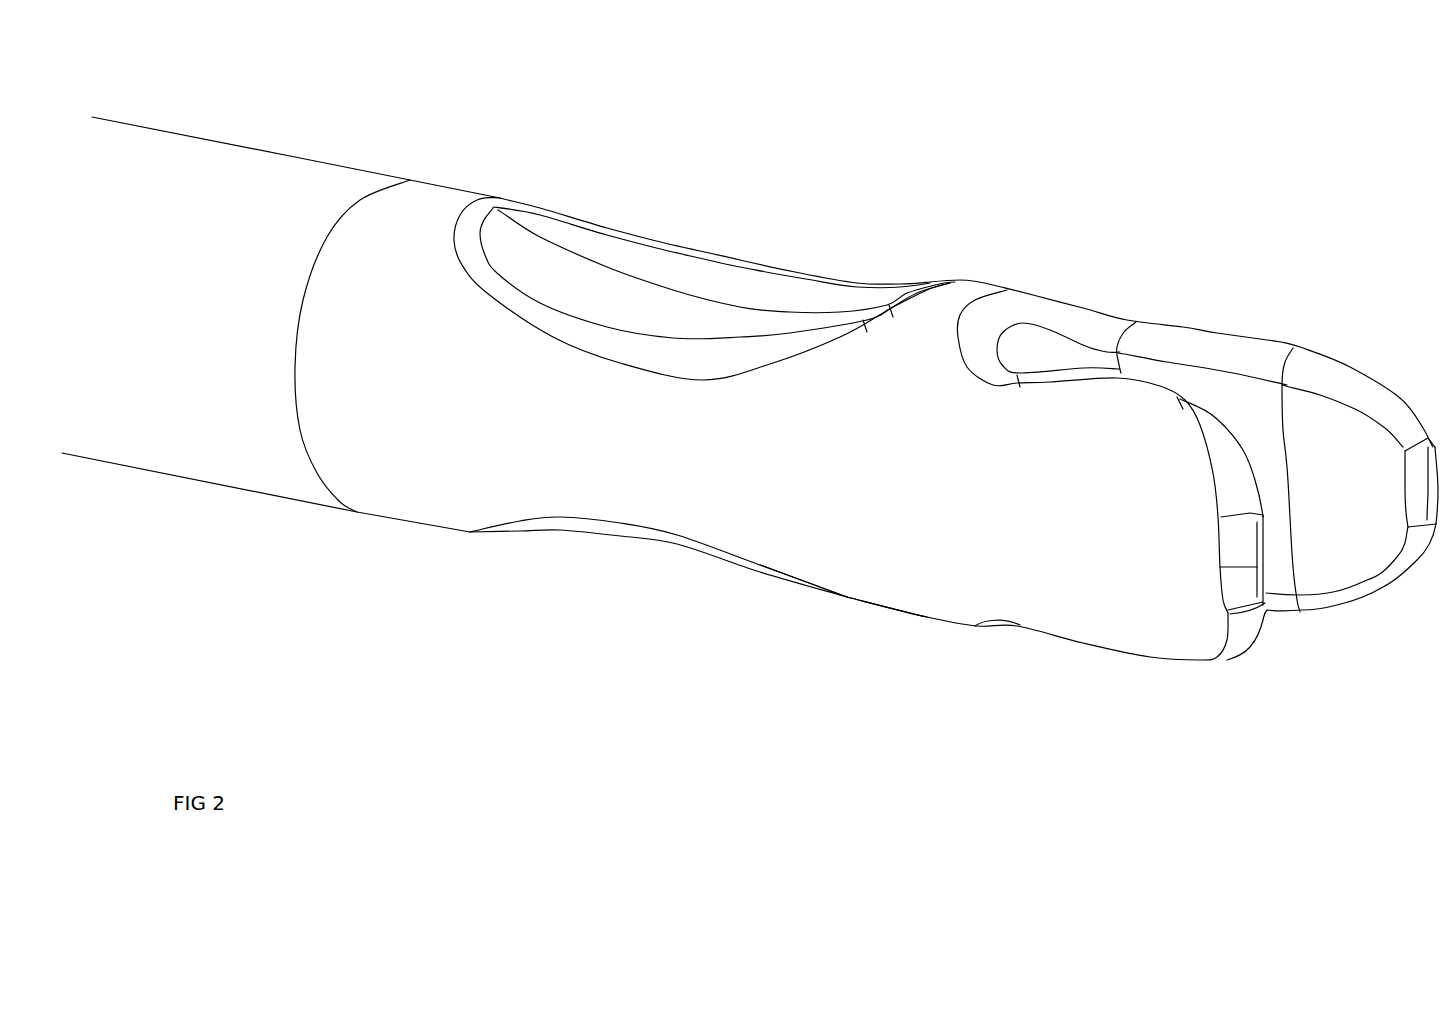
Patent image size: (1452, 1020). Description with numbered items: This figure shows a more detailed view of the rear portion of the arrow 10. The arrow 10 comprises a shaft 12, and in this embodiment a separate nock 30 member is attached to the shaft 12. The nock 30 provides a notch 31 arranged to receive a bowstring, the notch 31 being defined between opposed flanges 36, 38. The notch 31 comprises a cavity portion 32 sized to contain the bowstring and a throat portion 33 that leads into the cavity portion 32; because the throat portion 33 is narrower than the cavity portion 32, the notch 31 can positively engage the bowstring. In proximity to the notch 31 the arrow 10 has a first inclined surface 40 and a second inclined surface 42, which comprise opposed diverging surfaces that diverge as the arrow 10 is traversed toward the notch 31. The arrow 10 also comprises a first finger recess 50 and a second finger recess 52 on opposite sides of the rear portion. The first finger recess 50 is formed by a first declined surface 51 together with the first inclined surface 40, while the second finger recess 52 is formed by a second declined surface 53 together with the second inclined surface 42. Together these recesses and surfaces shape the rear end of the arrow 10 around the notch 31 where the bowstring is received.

The arrow 10 is at (262, 577).
The shaft 12 is at (228, 170).
The nock 30 is at (923, 602).
The notch 31 is at (1270, 655).
The cavity portion 32 is at (1059, 350).
The throat portion 33 is at (1158, 368).
The flange 36 is at (1152, 640).
The flange 38 is at (1343, 558).
The first inclined surface 40 is at (885, 307).
The second inclined surface 42 is at (803, 587).
The first finger recess 50 is at (707, 270).
The first declined surface 51 is at (540, 225).
The second finger recess 52 is at (657, 540).
The second declined surface 53 is at (520, 527).